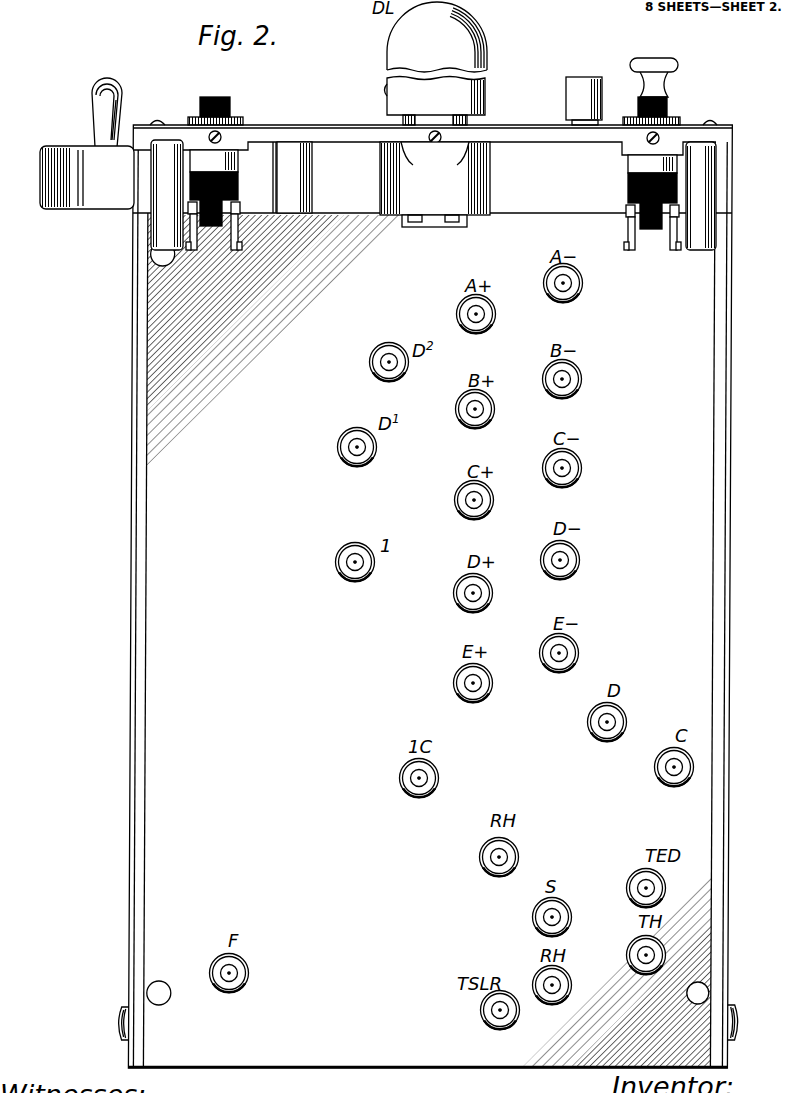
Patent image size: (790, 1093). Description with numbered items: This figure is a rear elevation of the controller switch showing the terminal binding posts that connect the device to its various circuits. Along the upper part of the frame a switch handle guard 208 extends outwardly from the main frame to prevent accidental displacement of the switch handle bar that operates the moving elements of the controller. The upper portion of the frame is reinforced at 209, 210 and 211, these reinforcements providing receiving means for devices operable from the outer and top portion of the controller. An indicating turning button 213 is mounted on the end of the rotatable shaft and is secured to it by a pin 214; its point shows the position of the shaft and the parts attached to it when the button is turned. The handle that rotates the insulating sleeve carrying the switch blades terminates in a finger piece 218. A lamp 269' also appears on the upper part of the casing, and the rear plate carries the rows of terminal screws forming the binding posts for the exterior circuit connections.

The switch handle guard 208 is at (96, 200).
The reinforced portion of upper frame 209 is at (263, 142).
The reinforced portion of upper frame 210 is at (492, 179).
The reinforced portion of upper frame 211 is at (680, 135).
The indicating turning button 213 is at (134, 367).
The pin 214 is at (577, 84).
The finger piece 218 is at (128, 94).
The lamp 269' is at (463, 63).